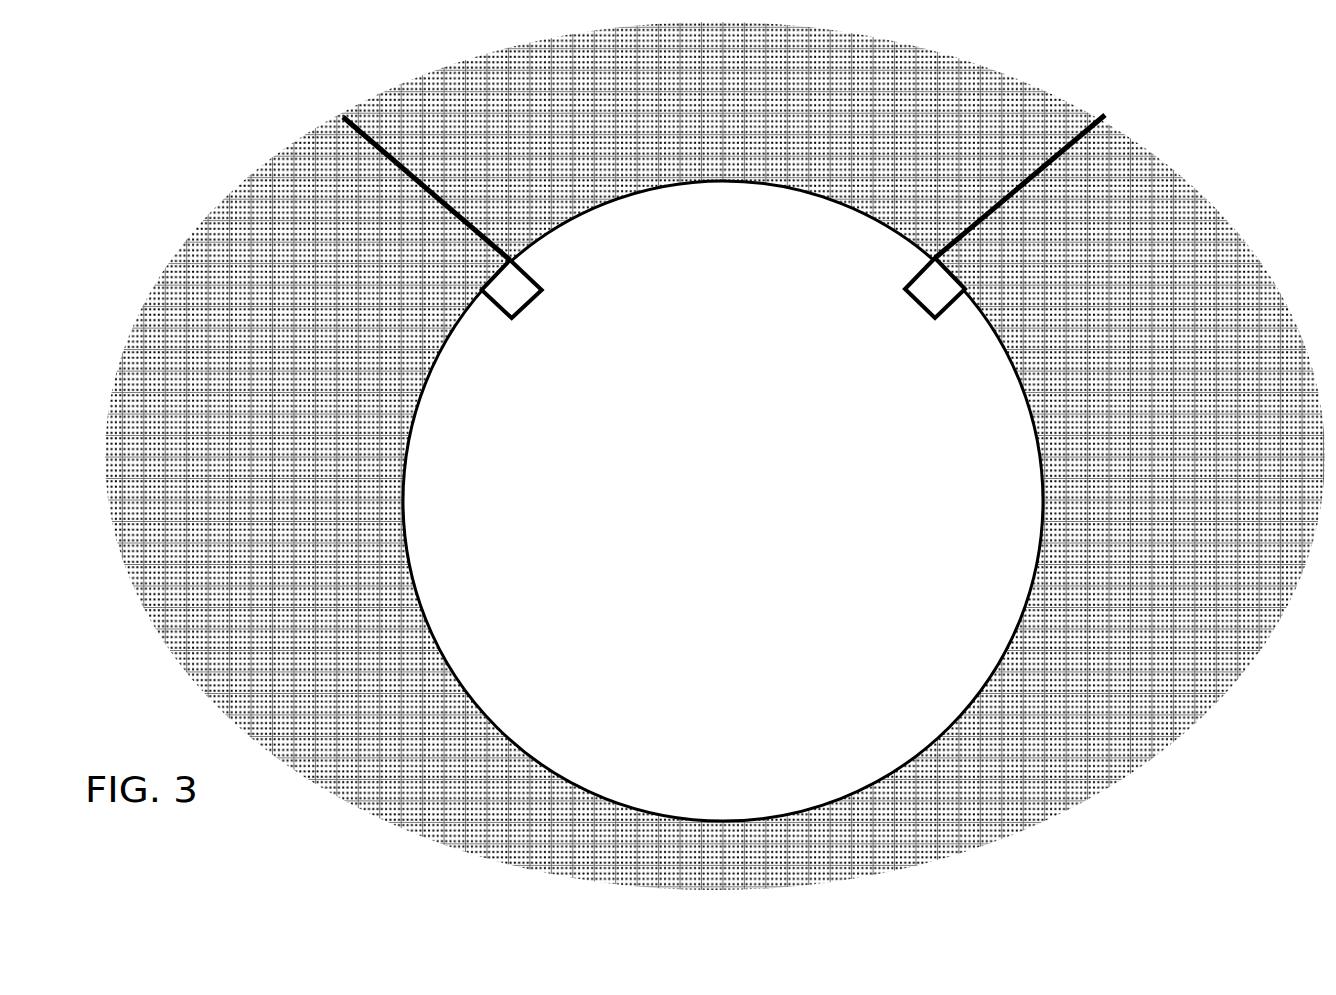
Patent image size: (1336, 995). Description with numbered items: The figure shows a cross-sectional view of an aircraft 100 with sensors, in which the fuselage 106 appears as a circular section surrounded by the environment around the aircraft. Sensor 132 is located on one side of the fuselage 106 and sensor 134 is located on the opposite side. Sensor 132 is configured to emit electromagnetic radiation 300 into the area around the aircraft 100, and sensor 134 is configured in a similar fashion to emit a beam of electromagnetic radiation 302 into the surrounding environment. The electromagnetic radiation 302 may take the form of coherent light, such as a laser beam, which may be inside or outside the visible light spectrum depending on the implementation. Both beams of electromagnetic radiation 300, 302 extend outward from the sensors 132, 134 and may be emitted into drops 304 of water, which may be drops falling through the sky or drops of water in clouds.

The aircraft 100 is at (715, 456).
The fuselage 106 is at (710, 183).
The sensor 132 is at (915, 298).
The sensor 134 is at (528, 298).
The electromagnetic radiation 300 is at (1103, 116).
The electromagnetic radiation 302 is at (343, 117).
The drops 304 is at (520, 173).